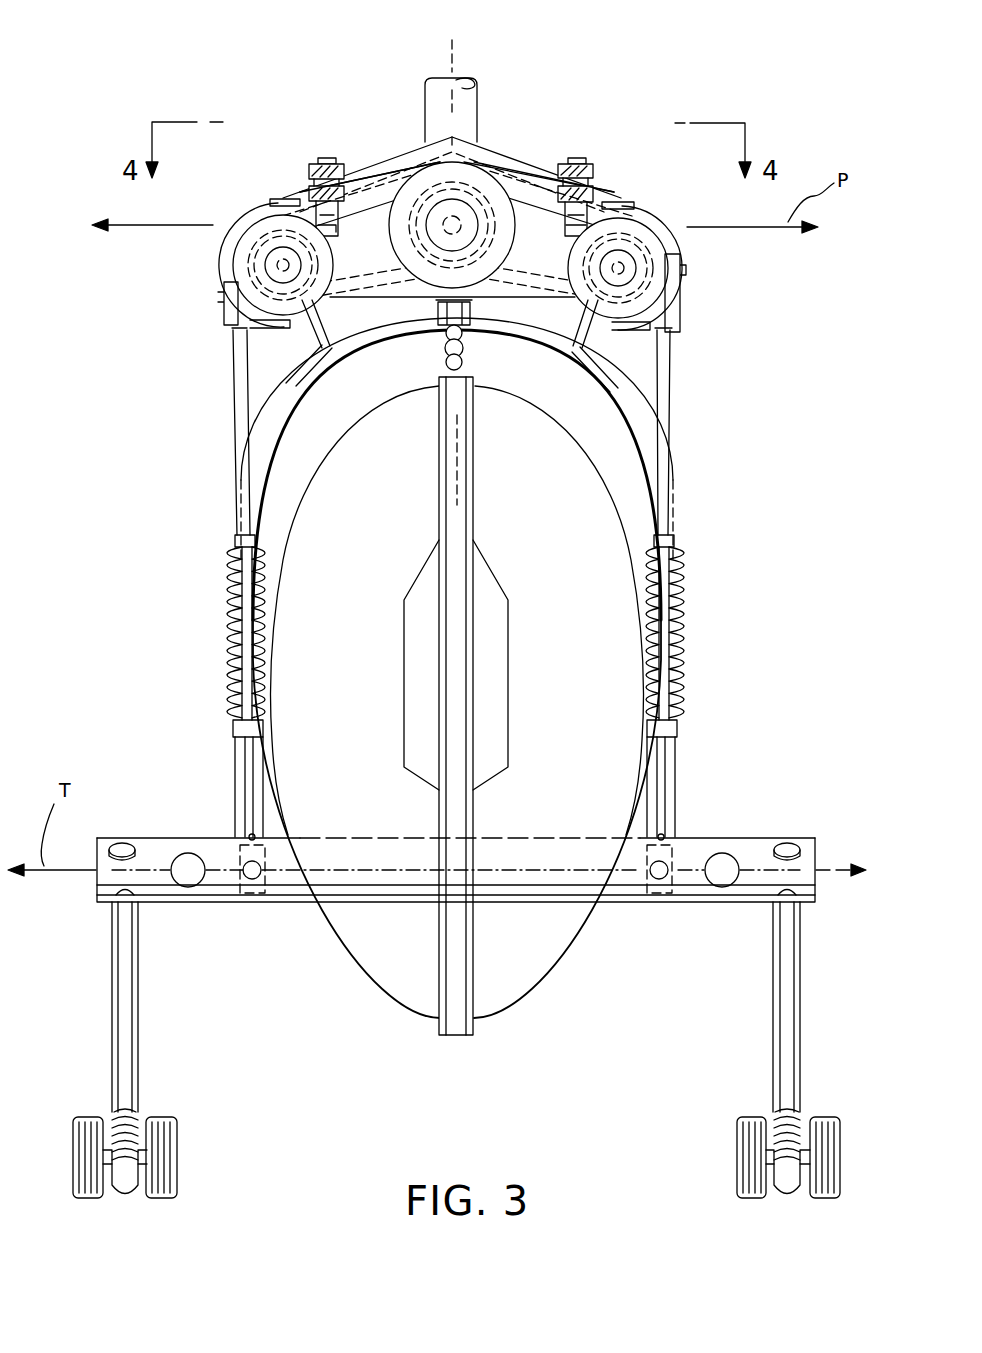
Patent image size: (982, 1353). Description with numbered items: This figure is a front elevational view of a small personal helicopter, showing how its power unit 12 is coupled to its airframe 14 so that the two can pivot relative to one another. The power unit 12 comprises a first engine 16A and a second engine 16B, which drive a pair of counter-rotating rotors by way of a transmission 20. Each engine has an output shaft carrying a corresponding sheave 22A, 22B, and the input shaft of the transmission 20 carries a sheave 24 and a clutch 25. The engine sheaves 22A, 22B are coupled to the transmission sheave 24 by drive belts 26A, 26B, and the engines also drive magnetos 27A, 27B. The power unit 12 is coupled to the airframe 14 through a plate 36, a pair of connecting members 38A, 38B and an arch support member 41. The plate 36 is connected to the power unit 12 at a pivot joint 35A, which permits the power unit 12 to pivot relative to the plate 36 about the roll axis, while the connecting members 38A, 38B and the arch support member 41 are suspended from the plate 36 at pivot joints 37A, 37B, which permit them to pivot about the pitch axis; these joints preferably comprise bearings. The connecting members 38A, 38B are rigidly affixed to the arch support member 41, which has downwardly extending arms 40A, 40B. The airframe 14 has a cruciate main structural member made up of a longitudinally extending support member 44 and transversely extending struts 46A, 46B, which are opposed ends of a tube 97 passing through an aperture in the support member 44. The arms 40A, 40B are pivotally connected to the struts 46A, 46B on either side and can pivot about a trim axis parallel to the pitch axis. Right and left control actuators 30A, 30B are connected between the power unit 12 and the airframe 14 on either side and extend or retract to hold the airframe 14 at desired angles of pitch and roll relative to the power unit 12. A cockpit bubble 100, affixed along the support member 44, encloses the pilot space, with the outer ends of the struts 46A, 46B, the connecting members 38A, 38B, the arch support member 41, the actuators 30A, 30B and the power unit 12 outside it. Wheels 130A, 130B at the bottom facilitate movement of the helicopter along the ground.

The power unit 12 is at (596, 135).
The airframe 14 is at (568, 878).
The first engine 16A is at (226, 280).
The second engine 16B is at (682, 282).
The transmission 20 is at (415, 184).
The sheave 22A is at (250, 322).
The sheave 22B is at (656, 243).
The sheave 24 is at (496, 183).
The clutch 25 is at (478, 198).
The drive belt 26A is at (302, 332).
The drive belt 26B is at (650, 336).
The magneto 27A is at (282, 262).
The magneto 27B is at (619, 266).
The right control actuator 30A is at (242, 470).
The left control actuator 30B is at (668, 424).
The pivot joint 35A is at (478, 142).
The plate 36 is at (392, 172).
The pivot joint 37A is at (312, 163).
The pivot joint 37B is at (588, 228).
The connecting member 38A is at (318, 292).
The connecting member 38B is at (604, 352).
The arm 40A is at (232, 730).
The arm 40B is at (664, 558).
The arch support member 41 is at (622, 400).
The longitudinally extending support member 44 is at (460, 1022).
The transversely extending strut 46A is at (210, 893).
The transversely extending strut 46B is at (688, 842).
The tube 97 is at (288, 890).
The cockpit bubble 100 is at (340, 758).
The wheels 130A is at (92, 1200).
The caster 130B is at (748, 1200).